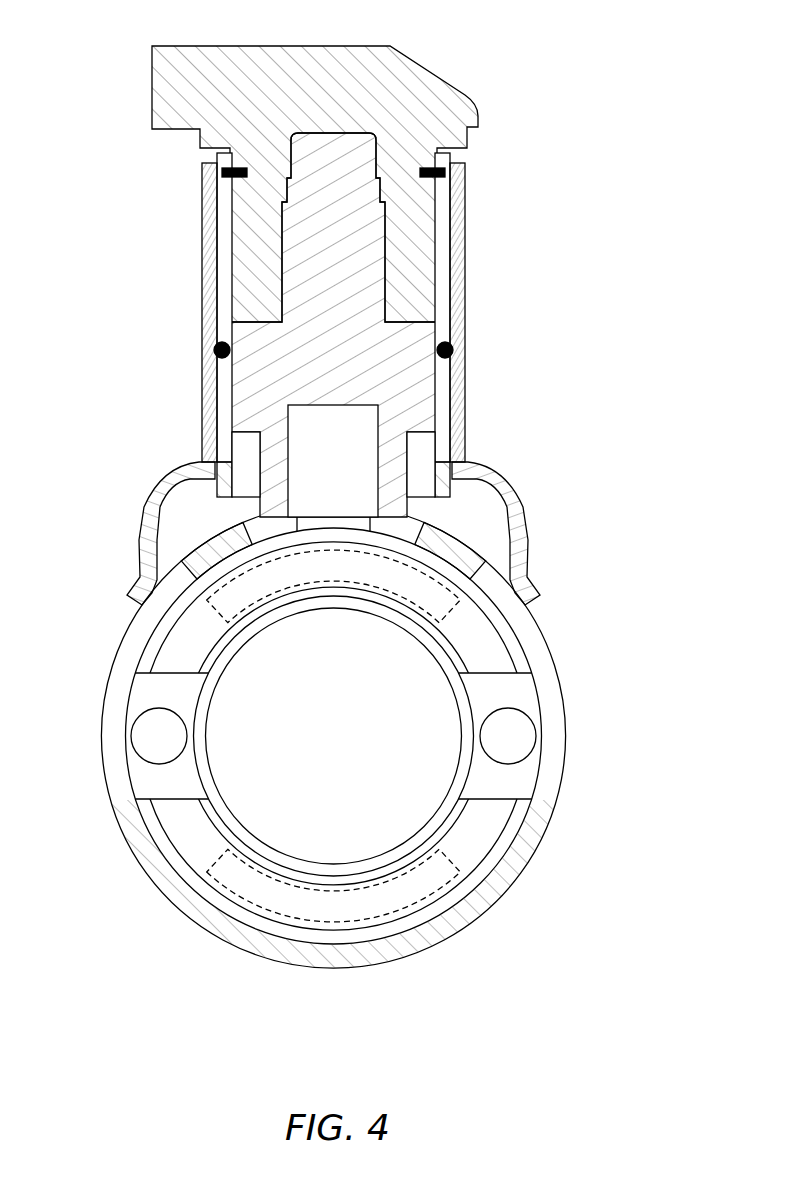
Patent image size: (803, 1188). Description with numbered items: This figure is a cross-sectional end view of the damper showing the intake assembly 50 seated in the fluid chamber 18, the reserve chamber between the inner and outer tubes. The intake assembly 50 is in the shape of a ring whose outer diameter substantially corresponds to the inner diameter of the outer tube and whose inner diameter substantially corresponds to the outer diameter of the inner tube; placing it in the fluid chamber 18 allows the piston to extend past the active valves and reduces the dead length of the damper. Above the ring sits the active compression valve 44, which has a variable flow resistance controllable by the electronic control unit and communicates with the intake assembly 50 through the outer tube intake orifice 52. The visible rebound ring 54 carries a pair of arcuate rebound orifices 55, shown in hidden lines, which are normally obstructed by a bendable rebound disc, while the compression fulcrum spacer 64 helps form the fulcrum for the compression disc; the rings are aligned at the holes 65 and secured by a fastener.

The active compression valve 44 is at (415, 118).
The outer tube intake orifice 52 is at (337, 525).
The fluid chamber 18 is at (177, 595).
The rebound ring 54 is at (495, 657).
The fastener hole 65 is at (520, 707).
The compression fulcrum spacer 64 is at (508, 782).
The intake assembly 50 is at (495, 843).
The rebound orifice 55 is at (432, 922).